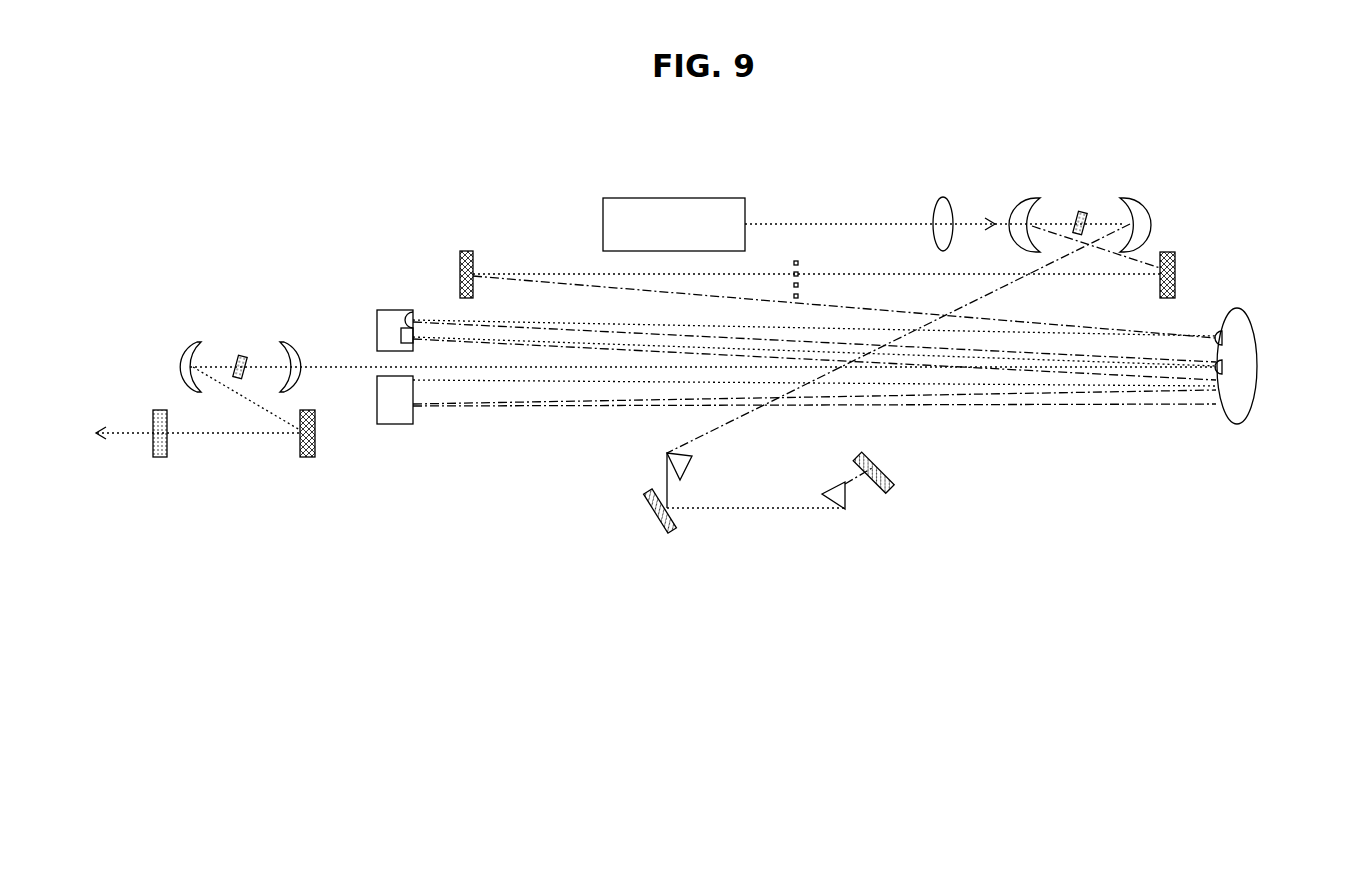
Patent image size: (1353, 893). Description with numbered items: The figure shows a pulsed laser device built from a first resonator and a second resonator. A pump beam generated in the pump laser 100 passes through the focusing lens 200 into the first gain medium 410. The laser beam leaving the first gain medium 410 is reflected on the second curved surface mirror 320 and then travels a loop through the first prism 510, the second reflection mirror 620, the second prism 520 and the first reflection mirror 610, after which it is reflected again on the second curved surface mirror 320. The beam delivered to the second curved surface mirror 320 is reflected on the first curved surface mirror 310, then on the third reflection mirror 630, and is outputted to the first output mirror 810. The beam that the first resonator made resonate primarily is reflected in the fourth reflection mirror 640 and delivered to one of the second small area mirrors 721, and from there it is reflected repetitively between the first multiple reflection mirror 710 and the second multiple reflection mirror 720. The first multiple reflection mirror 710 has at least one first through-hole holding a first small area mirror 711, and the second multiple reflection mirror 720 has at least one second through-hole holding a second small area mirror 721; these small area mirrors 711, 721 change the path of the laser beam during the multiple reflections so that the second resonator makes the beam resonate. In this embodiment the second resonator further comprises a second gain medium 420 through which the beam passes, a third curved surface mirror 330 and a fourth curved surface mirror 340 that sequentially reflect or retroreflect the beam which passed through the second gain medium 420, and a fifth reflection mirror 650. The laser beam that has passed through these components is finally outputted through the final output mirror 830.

The pump laser 100 is at (673, 198).
The focusing lens 200 is at (942, 197).
The first curved surface mirror 310 is at (1030, 197).
The second curved surface mirror 320 is at (1128, 197).
The third curved surface mirror 330 is at (286, 341).
The fourth curved surface mirror 340 is at (195, 341).
The first gain medium 410 is at (1082, 210).
The second gain medium 420 is at (242, 355).
The first prism 510 is at (693, 462).
The second prism 520 is at (838, 480).
The first reflection mirror 610 is at (895, 479).
The second reflection mirror 620 is at (640, 497).
The third reflection mirror 630 is at (1167, 251).
The fourth reflection mirror 640 is at (465, 250).
The fifth reflection mirror 650 is at (308, 458).
The first multiple reflection mirror 710 is at (397, 425).
The first small area mirror 711 is at (411, 311).
The second multiple reflection mirror 720 is at (1235, 308).
The second small area mirror 721 is at (1226, 340).
The first output mirror 810 is at (801, 267).
The final output mirror 830 is at (160, 458).